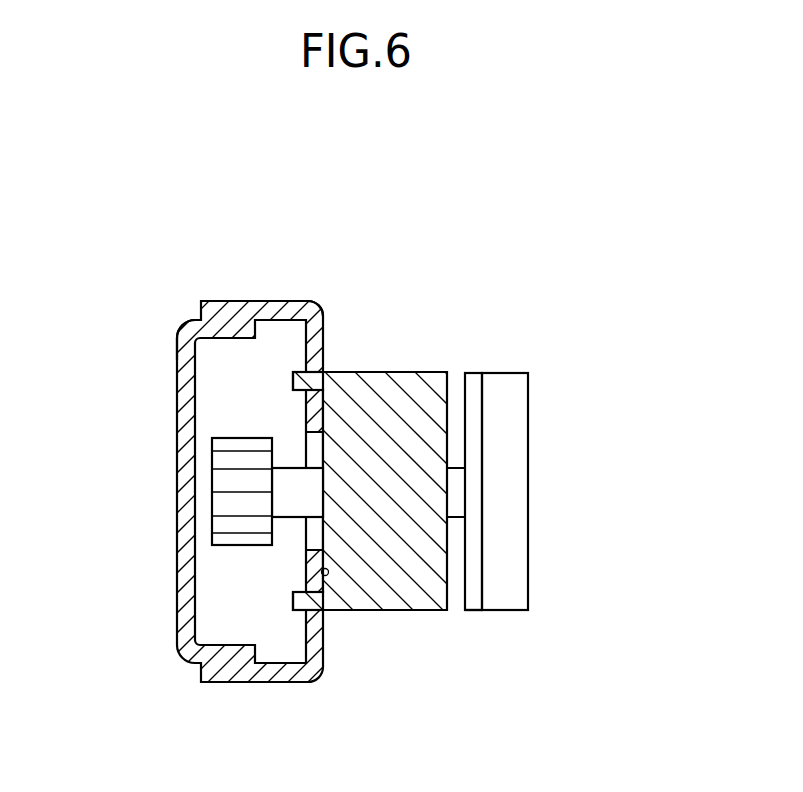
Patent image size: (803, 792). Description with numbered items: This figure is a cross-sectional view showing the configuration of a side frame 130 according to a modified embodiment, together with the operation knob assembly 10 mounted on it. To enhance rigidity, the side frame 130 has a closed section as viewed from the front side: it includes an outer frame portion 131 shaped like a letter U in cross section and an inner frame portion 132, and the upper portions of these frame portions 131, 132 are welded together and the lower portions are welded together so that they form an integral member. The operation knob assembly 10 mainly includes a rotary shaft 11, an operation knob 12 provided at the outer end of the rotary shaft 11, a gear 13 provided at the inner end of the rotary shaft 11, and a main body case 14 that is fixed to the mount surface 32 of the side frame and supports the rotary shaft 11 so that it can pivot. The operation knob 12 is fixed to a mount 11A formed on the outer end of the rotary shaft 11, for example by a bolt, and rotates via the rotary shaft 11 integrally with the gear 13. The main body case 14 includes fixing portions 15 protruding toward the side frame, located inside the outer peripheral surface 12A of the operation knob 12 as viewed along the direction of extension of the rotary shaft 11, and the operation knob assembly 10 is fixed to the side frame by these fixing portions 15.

The operation knob assembly 10 is at (575, 412).
The rotary shaft 11 is at (287, 477).
The mount 11A is at (470, 602).
The operation knob 12 is at (530, 447).
The outer peripheral surface 12A is at (495, 373).
The gear 13 is at (232, 479).
The main body case 14 is at (408, 395).
The fixing portions 15 is at (305, 380).
The mount surface 32 is at (322, 572).
The side frame 130 is at (300, 275).
The outer frame portion 131 is at (322, 307).
The inner frame portion 132 is at (182, 327).